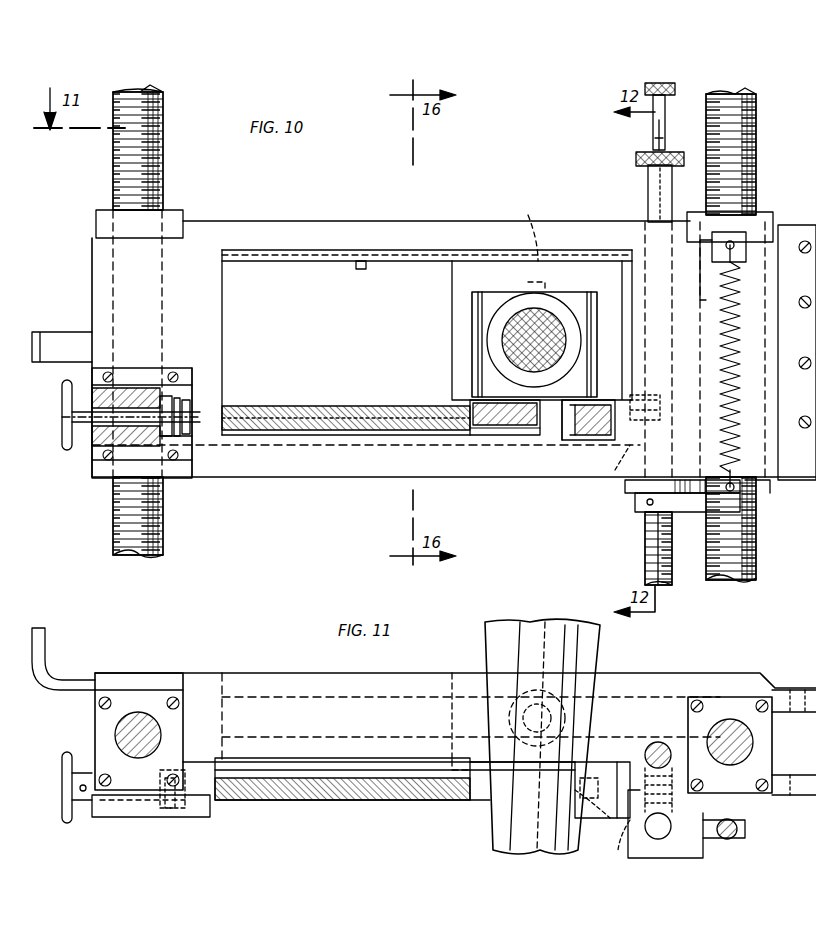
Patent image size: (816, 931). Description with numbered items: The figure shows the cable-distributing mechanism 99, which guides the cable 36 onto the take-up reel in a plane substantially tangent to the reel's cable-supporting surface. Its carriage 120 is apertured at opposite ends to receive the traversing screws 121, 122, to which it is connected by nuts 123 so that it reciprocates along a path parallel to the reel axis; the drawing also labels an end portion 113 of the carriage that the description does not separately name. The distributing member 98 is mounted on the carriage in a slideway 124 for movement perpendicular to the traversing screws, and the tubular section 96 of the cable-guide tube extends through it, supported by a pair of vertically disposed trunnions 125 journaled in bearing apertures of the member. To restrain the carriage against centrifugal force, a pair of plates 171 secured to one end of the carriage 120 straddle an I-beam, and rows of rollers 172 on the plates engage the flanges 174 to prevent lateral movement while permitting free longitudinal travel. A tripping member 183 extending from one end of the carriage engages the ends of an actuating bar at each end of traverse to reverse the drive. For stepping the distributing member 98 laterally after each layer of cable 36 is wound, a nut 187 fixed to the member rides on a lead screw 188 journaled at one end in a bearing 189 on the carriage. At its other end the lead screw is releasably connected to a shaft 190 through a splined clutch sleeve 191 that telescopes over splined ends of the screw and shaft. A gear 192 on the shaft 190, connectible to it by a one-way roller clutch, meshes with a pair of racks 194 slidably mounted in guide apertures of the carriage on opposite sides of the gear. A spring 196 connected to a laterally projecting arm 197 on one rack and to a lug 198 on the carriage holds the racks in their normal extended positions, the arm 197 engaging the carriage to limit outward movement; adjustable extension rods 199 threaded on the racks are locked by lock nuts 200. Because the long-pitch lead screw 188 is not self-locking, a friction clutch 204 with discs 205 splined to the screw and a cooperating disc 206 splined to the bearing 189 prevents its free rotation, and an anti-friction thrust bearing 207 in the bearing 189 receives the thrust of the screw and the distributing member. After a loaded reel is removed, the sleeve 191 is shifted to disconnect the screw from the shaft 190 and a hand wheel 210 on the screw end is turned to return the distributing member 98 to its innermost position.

In FIG. 10, the cable 36 is at (512, 350).
In FIG. 10, the tubular section 96 is at (500, 318).
In FIG. 11, the tubular section 96 is at (498, 628).
In FIG. 10, the distributing member 98 is at (452, 326).
In FIG. 11, the distributing member 98 is at (452, 690).
In FIG. 10, the distributing mechanism 99 is at (480, 180).
In FIG. 11, the distributing mechanism 99 is at (220, 660).
In FIG. 11, the end plate 113 is at (120, 700).
In FIG. 10, the carriage 120 is at (2, 236).
In FIG. 11, the carriage 120 is at (270, 673).
In FIG. 10, the traversing screw 121 is at (163, 168).
In FIG. 11, the traversing screw 121 is at (135, 715).
In FIG. 10, the traversing screw 122 is at (745, 115).
In FIG. 11, the traversing screw 122 is at (722, 720).
In FIG. 10, the nut 123 is at (178, 210).
In FIG. 10, the slideway 124 is at (358, 261).
In FIG. 10, the trunnion 125 is at (530, 244).
In FIG. 11, the trunnion 125 is at (537, 690).
In FIG. 10, the plate 171 is at (790, 500).
In FIG. 10, the roller 172 is at (797, 352).
In FIG. 11, the roller 172 is at (794, 742).
In FIG. 10, the flange 174 is at (803, 555).
In FIG. 10, the tripping member 183 is at (50, 332).
In FIG. 11, the tripping member 183 is at (40, 640).
In FIG. 10, the nut 187 is at (500, 435).
In FIG. 11, the nut 187 is at (475, 800).
In FIG. 10, the lead screw 188 is at (332, 406).
In FIG. 11, the lead screw 188 is at (348, 800).
In FIG. 10, the bearing 189 is at (92, 462).
In FIG. 11, the bearing 189 is at (108, 805).
In FIG. 10, the shaft 190 is at (620, 478).
In FIG. 11, the shaft 190 is at (630, 828).
In FIG. 10, the splined clutch sleeve 191 is at (585, 440).
In FIG. 11, the splined clutch sleeve 191 is at (608, 762).
In FIG. 11, the gear 192 is at (625, 845).
In FIG. 10, the rack 194 is at (648, 185).
In FIG. 11, the rack 194 is at (658, 742).
In FIG. 10, the spring 196 is at (758, 478).
In FIG. 11, the spring 196 is at (745, 830).
In FIG. 10, the laterally projecting arm 197 is at (686, 512).
In FIG. 10, the lug 198 is at (730, 232).
In FIG. 11, the lug 198 is at (737, 826).
In FIG. 10, the adjustable extension rod 199 is at (653, 124).
In FIG. 10, the lock nut 200 is at (636, 155).
In FIG. 10, the friction clutch 204 is at (190, 440).
In FIG. 11, the friction clutch 204 is at (185, 808).
In FIG. 10, the disc 205 is at (172, 400).
In FIG. 10, the disc 206 is at (180, 412).
In FIG. 10, the anti-friction thrust bearing 207 is at (165, 446).
In FIG. 10, the hand wheel 210 is at (65, 445).
In FIG. 11, the hand wheel 210 is at (62, 815).